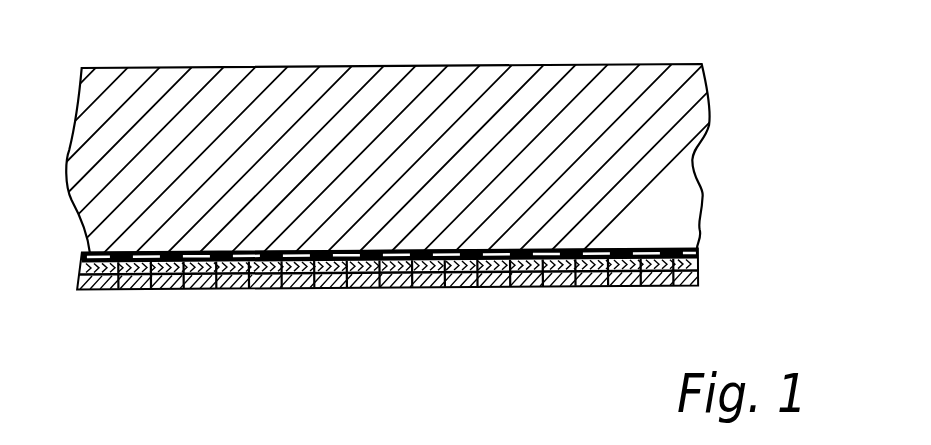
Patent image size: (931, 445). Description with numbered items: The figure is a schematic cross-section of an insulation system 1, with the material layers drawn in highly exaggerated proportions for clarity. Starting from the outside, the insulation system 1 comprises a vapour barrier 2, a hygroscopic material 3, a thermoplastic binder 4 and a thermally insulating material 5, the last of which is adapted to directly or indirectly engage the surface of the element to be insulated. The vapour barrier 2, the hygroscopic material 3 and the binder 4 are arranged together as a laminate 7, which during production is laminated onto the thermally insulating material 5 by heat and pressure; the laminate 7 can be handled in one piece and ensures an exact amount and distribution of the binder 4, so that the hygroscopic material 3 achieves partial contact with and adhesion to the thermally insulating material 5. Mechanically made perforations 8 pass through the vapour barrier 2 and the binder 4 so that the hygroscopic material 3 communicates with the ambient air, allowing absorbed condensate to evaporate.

The insulation system 1 is at (413, 206).
The vapour barrier 2 is at (700, 278).
The hygroscopic material 3 is at (700, 262).
The thermoplastic binder 4 is at (681, 249).
The thermally insulating material 5 is at (693, 162).
The laminate 7 is at (429, 300).
The perforations 8 is at (322, 290).